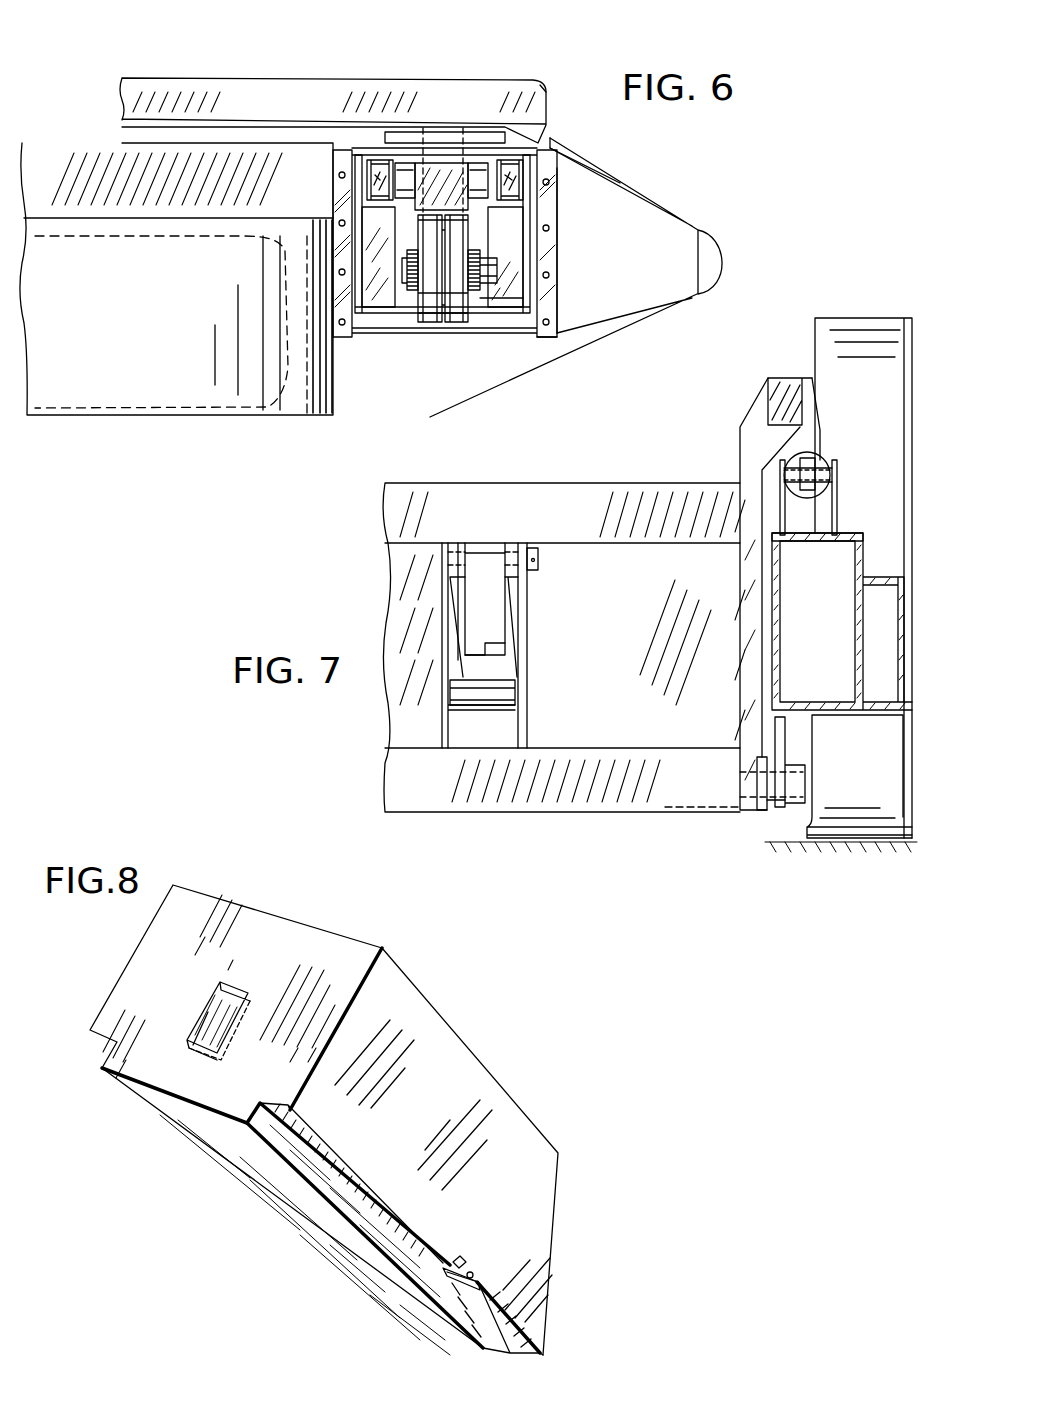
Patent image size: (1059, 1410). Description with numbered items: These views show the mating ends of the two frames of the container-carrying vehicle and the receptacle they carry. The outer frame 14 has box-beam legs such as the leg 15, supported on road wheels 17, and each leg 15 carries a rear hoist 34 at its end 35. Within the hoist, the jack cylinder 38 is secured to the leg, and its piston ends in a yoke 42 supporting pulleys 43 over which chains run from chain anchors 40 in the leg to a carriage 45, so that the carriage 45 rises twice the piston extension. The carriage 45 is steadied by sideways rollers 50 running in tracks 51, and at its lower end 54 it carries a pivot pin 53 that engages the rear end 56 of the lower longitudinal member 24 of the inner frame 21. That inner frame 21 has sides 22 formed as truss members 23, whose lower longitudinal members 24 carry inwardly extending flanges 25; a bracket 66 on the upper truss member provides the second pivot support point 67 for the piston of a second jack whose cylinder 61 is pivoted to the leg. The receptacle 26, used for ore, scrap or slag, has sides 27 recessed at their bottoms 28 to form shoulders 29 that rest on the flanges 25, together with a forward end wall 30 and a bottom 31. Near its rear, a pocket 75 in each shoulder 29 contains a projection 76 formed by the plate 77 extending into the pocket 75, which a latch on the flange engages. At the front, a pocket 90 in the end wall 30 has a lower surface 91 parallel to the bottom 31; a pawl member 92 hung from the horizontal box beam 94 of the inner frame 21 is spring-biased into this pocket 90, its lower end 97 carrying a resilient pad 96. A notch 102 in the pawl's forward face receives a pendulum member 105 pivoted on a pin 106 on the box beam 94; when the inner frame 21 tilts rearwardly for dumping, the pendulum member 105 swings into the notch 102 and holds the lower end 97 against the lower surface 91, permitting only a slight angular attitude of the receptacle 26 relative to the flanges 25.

In FIG. 6, the outer frame 14 is at (464, 318).
In FIG. 6, the leg 15 is at (64, 160).
In FIG. 7, the leg 15 is at (832, 647).
In FIG. 6, the road wheels 17 is at (276, 425).
In FIG. 7, the road wheels 17 is at (870, 795).
In FIG. 6, the inner frame 21 is at (180, 72).
In FIG. 7, the inner frame 21 is at (733, 432).
In FIG. 7, the sides 22 is at (739, 473).
In FIG. 7, the truss member 23 is at (790, 394).
In FIG. 6, the lower longitudinal member 24 is at (275, 121).
In FIG. 6, the flange 25 is at (386, 79).
In FIG. 7, the flange 25 is at (665, 807).
In FIG. 8, the receptacle 26 is at (458, 1008).
In FIG. 8, the sides 27 is at (545, 1170).
In FIG. 8, the bottoms 28 is at (542, 1342).
In FIG. 8, the shoulder 29 is at (477, 1335).
In FIG. 8, the forward end wall 30 is at (302, 955).
In FIG. 8, the bottom 31 is at (188, 1133).
In FIG. 6, the rear hoist 34 is at (410, 348).
In FIG. 6, the end 35 is at (498, 370).
In FIG. 6, the cylinder 38 is at (402, 291).
In FIG. 6, the chain anchor 40 is at (482, 320).
In FIG. 6, the yoke 42 is at (480, 273).
In FIG. 6, the pulleys 43 is at (497, 297).
In FIG. 6, the carriage 45 is at (440, 174).
In FIG. 7, the carriage 45 is at (784, 740).
In FIG. 6, the sideways rollers 50 is at (376, 178).
In FIG. 6, the tracks 51 is at (498, 197).
In FIG. 6, the pivot pin 53 is at (548, 205).
In FIG. 7, the pivot pin 53 is at (736, 825).
In FIG. 7, the lower end 54 is at (777, 808).
In FIG. 6, the rear end 56 is at (540, 126).
In FIG. 7, the cylinder 61 is at (818, 461).
In FIG. 7, the bracket 66 is at (838, 523).
In FIG. 7, the second pivot support point 67 is at (840, 490).
In FIG. 8, the pocket 75 is at (478, 1279).
In FIG. 8, the projection 76 is at (462, 1267).
In FIG. 8, the plate 77 is at (375, 1200).
In FIG. 8, the pocket 90 is at (206, 1002).
In FIG. 8, the lower surface 91 is at (207, 1027).
In FIG. 7, the pawl member 92 is at (501, 658).
In FIG. 7, the horizontal box beam 94 is at (498, 518).
In FIG. 7, the resilient pad 96 is at (494, 702).
In FIG. 7, the lower end 97 is at (490, 680).
In FIG. 7, the notch 102 is at (481, 648).
In FIG. 7, the pendulum member 105 is at (485, 596).
In FIG. 7, the pin 106 is at (500, 551).